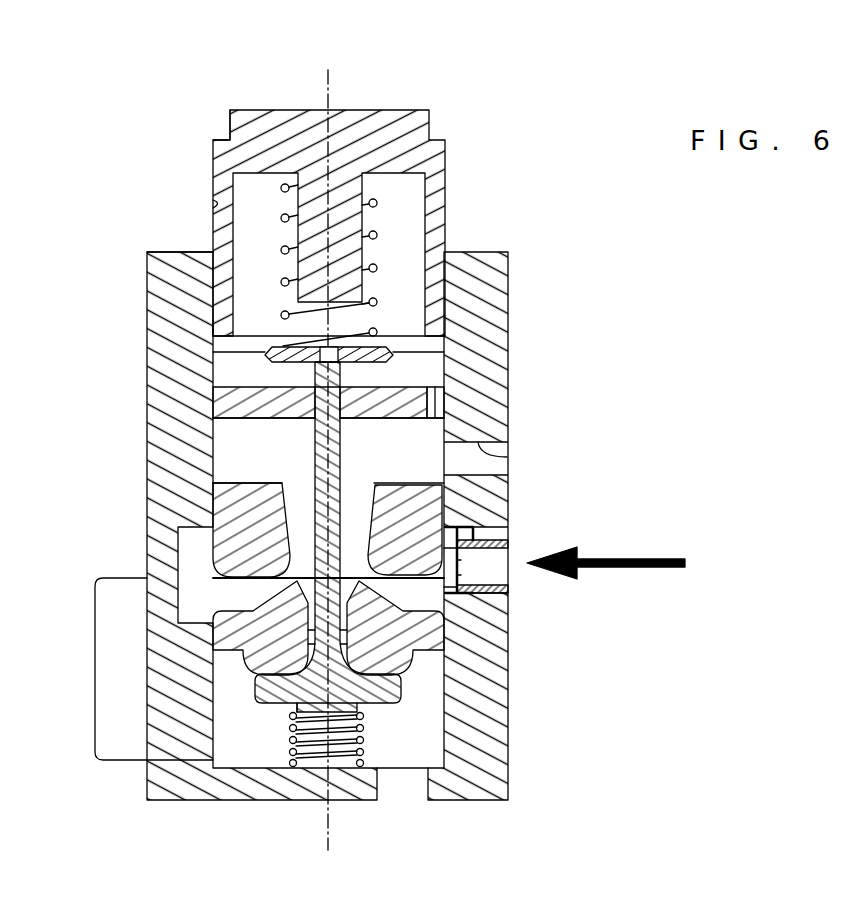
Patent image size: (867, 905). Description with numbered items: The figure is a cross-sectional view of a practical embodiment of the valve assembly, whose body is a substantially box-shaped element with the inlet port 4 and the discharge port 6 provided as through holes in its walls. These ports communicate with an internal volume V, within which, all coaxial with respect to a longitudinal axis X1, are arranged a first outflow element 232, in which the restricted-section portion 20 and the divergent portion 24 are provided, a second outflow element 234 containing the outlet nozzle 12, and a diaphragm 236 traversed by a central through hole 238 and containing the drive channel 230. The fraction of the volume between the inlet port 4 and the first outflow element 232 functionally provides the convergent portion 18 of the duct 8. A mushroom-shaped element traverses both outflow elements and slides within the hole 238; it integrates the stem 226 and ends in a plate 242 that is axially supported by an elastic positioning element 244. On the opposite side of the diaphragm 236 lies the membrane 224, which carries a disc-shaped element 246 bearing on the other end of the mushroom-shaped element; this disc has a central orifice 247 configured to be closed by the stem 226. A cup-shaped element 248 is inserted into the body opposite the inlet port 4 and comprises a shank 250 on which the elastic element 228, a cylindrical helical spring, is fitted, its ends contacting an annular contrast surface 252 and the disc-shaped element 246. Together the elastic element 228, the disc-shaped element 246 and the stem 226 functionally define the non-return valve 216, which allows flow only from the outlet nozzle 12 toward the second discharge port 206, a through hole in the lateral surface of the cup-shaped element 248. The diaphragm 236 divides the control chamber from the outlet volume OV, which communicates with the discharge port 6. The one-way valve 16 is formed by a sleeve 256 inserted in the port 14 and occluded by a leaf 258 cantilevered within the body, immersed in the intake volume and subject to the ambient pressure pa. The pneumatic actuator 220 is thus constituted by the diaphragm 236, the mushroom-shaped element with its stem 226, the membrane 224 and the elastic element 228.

The inlet port 4 is at (378, 777).
The discharge port 6 is at (507, 458).
The main duct 8 is at (95, 672).
The outlet nozzle 12 is at (288, 532).
The inlet port 14 is at (507, 557).
The one-way valve 16 is at (441, 586).
The convergent portion 18 is at (408, 722).
The restricted-section portion 20 is at (290, 657).
The divergent portion 24 is at (298, 583).
The second discharge port 206 is at (224, 205).
The non-return valve 216 is at (381, 333).
The pneumatic actuator 220 is at (212, 275).
The membrane 224 is at (212, 322).
The stem 226 is at (348, 454).
The elastic element 228 is at (283, 214).
The drive channel 230 is at (445, 408).
The first outflow element 232 is at (416, 668).
The second outflow element 234 is at (420, 535).
The diaphragm 236 is at (444, 373).
The central through hole 238 is at (345, 402).
The plate 242 is at (278, 704).
The elastic positioning element 244 is at (313, 770).
The disc-shaped element 246 is at (248, 323).
The central orifice 247 is at (213, 392).
The cup-shaped element 248 is at (449, 215).
The shank 250 is at (357, 225).
The annular contrast surface 252 is at (266, 182).
The sleeve 256 is at (462, 585).
The leaf 258 is at (462, 563).
The outlet volume OV is at (240, 462).
The internal volume V is at (369, 725).
The longitudinal axis X1 is at (328, 93).
The ambient pressure pa is at (611, 550).